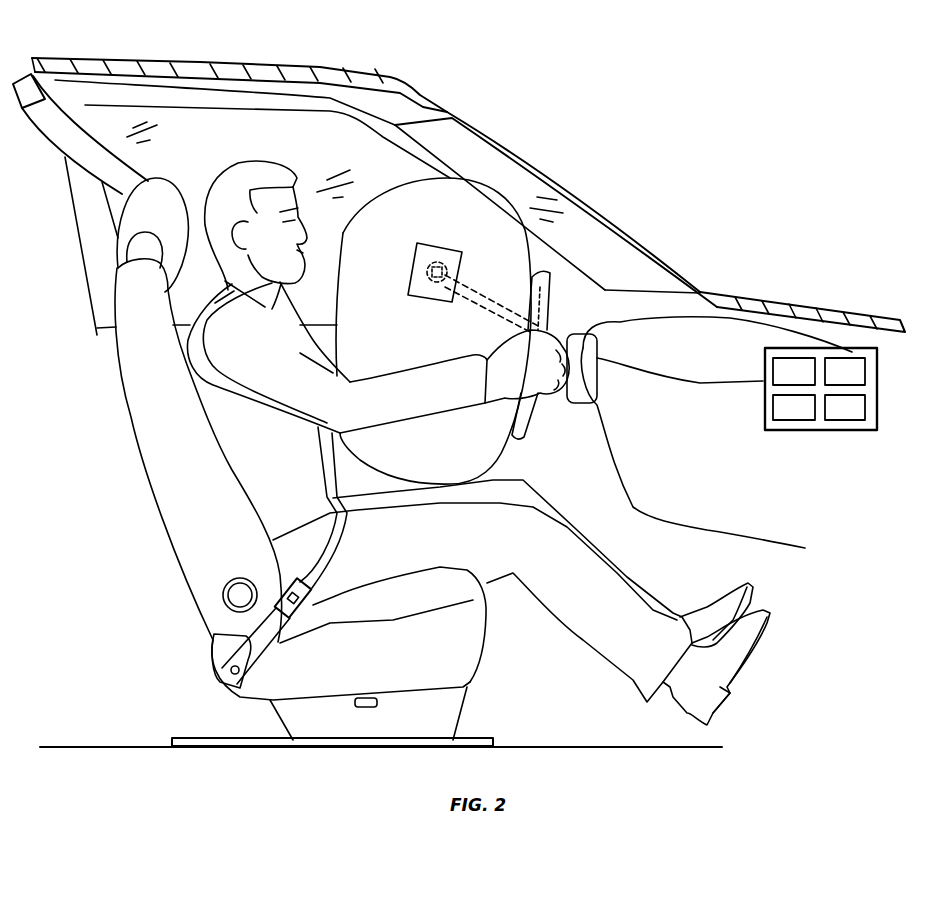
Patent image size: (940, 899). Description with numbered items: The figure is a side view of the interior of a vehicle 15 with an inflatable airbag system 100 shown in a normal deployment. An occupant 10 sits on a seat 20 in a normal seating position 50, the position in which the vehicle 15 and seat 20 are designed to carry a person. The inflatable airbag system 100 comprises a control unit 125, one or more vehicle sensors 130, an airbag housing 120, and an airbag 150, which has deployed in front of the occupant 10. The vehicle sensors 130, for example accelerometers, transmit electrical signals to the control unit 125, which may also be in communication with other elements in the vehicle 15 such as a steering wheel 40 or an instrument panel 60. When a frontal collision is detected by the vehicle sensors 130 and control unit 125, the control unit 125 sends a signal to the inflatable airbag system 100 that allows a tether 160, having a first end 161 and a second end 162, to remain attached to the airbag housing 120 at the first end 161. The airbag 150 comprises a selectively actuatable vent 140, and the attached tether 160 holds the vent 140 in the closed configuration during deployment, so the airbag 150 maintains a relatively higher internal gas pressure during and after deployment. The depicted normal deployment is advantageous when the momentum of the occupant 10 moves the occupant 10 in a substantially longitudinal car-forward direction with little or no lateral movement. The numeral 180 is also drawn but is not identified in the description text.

The occupant 10 is at (288, 464).
The vehicle 15 is at (393, 72).
The seat 20 is at (186, 452).
The steering wheel 40 is at (527, 432).
The normal seating position 50 is at (203, 174).
The instrument panel 60 is at (716, 451).
The inflatable airbag system 100 is at (645, 293).
The airbag housing 120 is at (573, 319).
The control unit 125 is at (840, 347).
The vehicle sensors 130 is at (878, 366).
The selectively actuatable vent 140 is at (411, 295).
The airbag 150 is at (453, 177).
The tether 160 is at (455, 293).
The first end 161 is at (550, 273).
The second end 162 is at (445, 290).
The actuator 180 is at (587, 370).